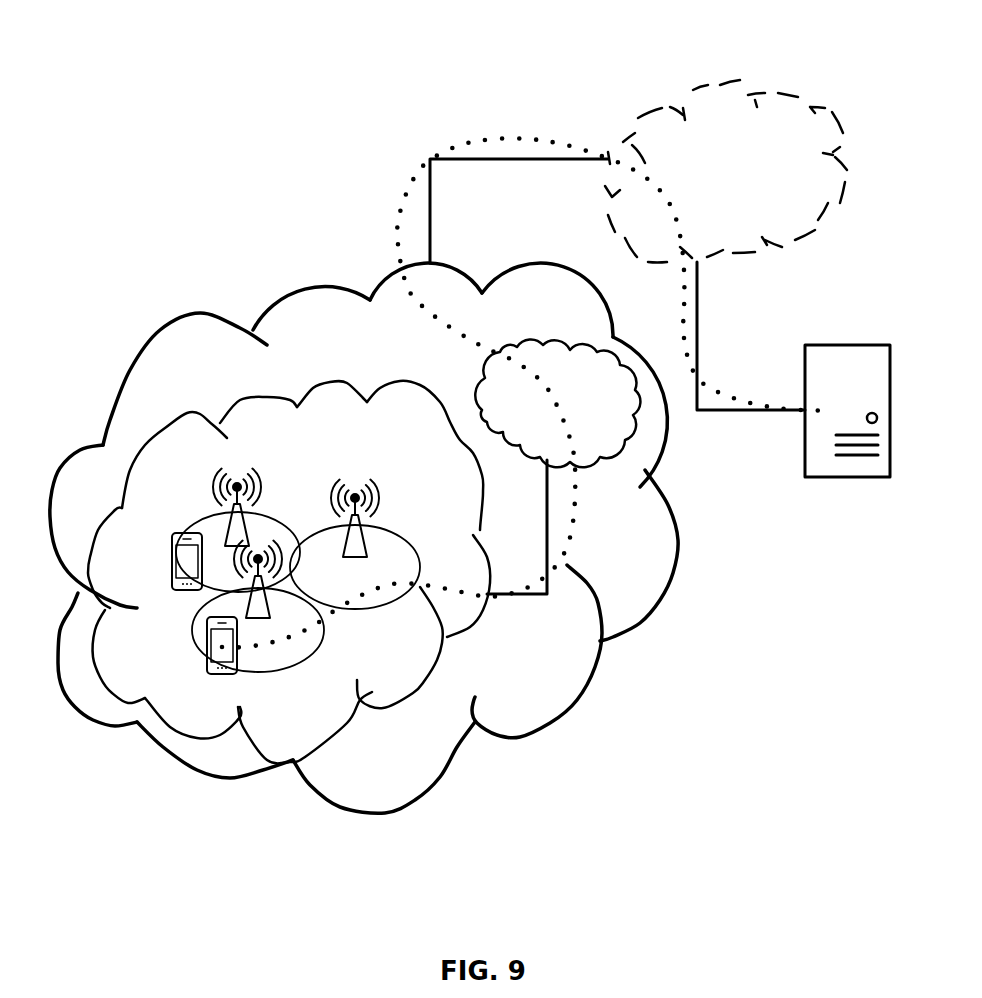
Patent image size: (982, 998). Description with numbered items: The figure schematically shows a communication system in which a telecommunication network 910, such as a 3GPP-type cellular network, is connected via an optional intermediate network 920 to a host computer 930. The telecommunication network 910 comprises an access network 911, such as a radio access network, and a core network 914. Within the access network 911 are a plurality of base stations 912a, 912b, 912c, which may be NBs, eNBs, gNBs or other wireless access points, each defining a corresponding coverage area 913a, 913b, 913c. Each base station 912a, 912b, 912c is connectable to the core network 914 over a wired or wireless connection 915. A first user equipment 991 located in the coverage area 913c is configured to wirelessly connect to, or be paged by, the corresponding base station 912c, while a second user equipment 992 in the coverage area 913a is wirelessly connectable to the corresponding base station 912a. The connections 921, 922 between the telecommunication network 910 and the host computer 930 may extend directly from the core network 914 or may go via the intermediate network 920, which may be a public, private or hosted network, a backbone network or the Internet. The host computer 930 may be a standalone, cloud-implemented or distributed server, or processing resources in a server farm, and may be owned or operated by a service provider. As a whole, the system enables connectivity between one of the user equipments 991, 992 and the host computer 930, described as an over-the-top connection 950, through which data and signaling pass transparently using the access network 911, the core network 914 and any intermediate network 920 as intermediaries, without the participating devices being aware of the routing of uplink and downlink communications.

The telecommunication network 910 is at (364, 538).
The access network 911 is at (289, 572).
The base station 912a is at (300, 622).
The base station 912b is at (380, 500).
The base station 912c is at (217, 493).
The coverage area 913a is at (240, 622).
The coverage area 913b is at (420, 568).
The coverage area 913c is at (190, 533).
The core network 914 is at (557, 403).
The wired or wireless connection 915 is at (548, 505).
The intermediate network 920 is at (726, 171).
The connection 921 is at (510, 157).
The connection 922 is at (762, 412).
The host computer 930 is at (847, 426).
The over-the-top connection 950 is at (408, 185).
The first user equipment 991 is at (200, 592).
The second user equipment 992 is at (213, 667).